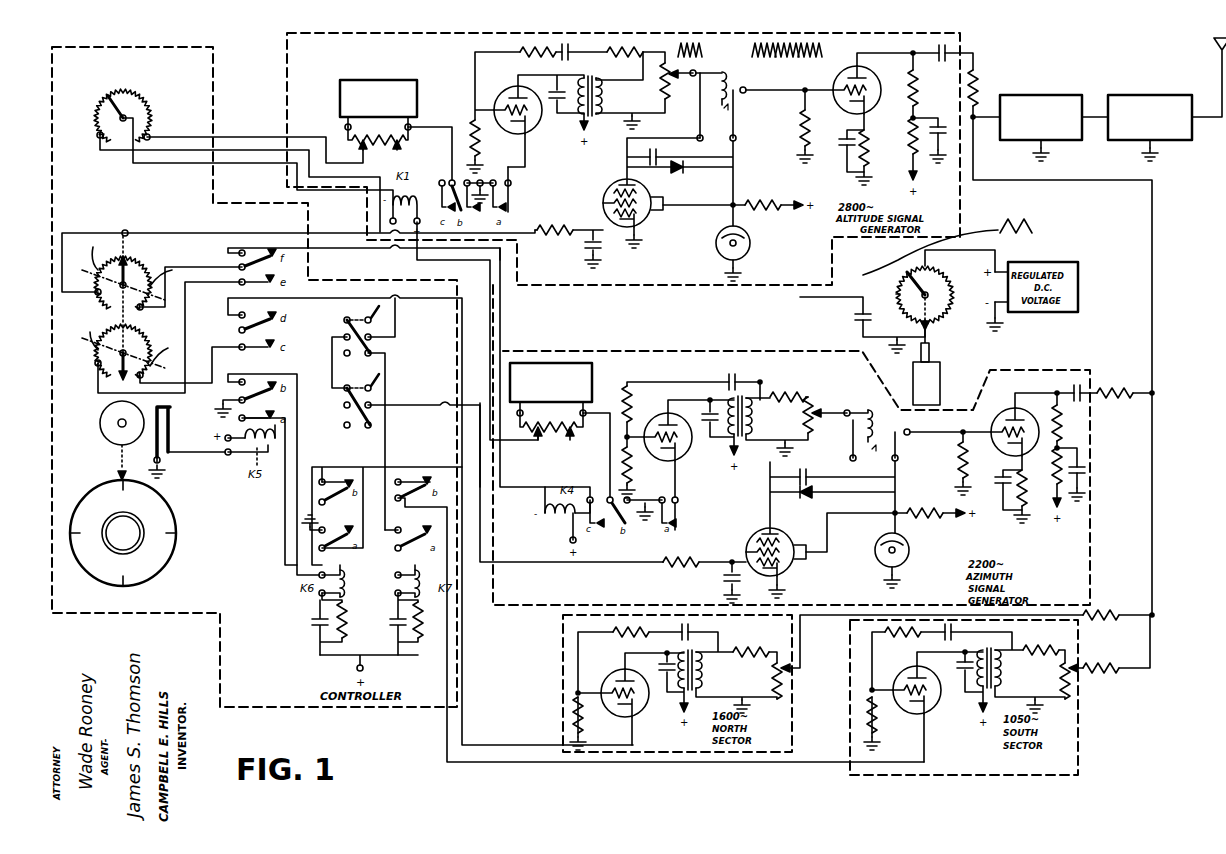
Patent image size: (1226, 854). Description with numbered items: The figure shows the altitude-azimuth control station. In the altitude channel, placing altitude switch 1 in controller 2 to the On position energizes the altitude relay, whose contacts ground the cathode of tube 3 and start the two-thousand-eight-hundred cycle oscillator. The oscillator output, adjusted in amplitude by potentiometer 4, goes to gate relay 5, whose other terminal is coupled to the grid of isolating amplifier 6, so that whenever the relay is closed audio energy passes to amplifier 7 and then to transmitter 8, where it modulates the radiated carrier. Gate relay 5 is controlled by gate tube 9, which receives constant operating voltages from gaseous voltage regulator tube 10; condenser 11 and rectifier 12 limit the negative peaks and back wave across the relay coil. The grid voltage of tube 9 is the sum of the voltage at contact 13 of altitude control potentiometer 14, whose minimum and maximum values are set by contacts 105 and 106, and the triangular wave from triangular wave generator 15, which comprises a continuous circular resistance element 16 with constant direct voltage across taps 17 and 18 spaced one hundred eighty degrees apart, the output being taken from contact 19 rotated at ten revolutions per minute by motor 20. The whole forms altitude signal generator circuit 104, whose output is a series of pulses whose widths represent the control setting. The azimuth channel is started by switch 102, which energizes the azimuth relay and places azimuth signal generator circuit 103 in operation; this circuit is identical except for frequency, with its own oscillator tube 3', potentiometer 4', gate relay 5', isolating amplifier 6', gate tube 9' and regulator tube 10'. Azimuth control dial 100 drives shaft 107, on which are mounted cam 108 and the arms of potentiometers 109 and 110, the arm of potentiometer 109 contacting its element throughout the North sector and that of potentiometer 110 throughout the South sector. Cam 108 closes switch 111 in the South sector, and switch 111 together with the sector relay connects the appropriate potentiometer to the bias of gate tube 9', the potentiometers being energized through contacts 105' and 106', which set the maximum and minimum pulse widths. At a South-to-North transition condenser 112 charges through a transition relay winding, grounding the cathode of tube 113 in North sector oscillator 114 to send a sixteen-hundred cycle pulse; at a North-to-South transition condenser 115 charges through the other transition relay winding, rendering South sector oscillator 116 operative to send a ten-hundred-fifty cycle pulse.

The altitude switch 1 is at (328, 332).
The controller 2 is at (216, 72).
The tube 3 is at (522, 112).
The oscillator tube 3' is at (668, 437).
The potentiometer 4 is at (676, 86).
The potentiometer 4' is at (825, 419).
The gate relay 5 is at (761, 104).
The gate relay 5' is at (917, 435).
The isolating amplifier 6 is at (861, 89).
The isolating amplifier 6' is at (1010, 425).
The amplifier 7 is at (1040, 95).
The transmitter 8 is at (1150, 95).
The gate tube 9 is at (627, 198).
The gate tube 9' is at (771, 548).
The gaseous voltage regulator tube 10 is at (745, 253).
The gaseous voltage regulator tube 10' is at (892, 560).
The condenser 11 is at (662, 155).
The rectifier 12 is at (680, 172).
The contact 13 is at (125, 107).
The altitude control potentiometer 14 is at (140, 85).
The triangular wave generator 15 is at (955, 322).
The continuous circular resistance element 16 is at (896, 283).
The tap 17 is at (938, 268).
The tap 18 is at (930, 330).
The contact 19 is at (926, 283).
The motor 20 is at (942, 385).
The azimuth control dial 100 is at (178, 516).
The switch 102 is at (342, 413).
The azimuth signal generator circuit 103 is at (1092, 490).
The altitude signal generator circuit 104 is at (963, 42).
The contact 105 is at (378, 130).
The contact 106 is at (419, 140).
The contact 105' is at (559, 430).
The contact 106' is at (583, 447).
The shaft 107 is at (110, 463).
The cam 108 is at (100, 422).
The potentiometer 109 is at (99, 300).
The potentiometer 110 is at (99, 376).
The switch 111 is at (170, 468).
The condenser 112 is at (320, 626).
The tube 113 is at (622, 685).
The North sector oscillator 114 is at (794, 716).
The condenser 115 is at (396, 620).
The South sector oscillator 116 is at (1080, 716).